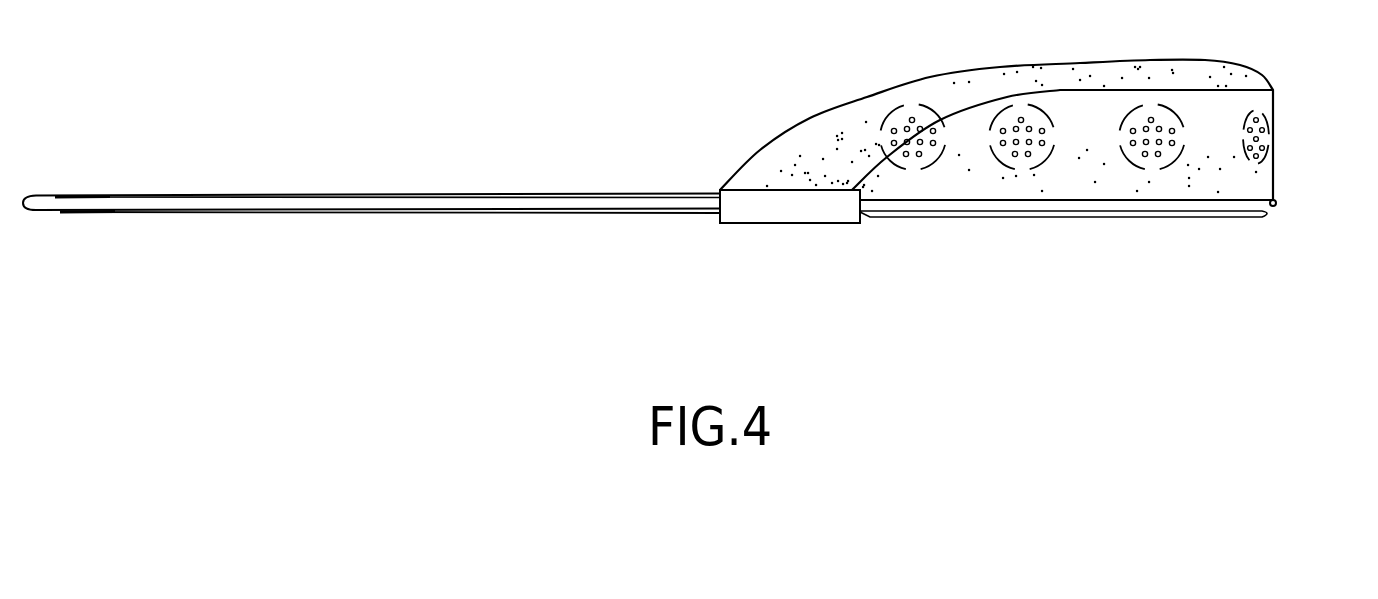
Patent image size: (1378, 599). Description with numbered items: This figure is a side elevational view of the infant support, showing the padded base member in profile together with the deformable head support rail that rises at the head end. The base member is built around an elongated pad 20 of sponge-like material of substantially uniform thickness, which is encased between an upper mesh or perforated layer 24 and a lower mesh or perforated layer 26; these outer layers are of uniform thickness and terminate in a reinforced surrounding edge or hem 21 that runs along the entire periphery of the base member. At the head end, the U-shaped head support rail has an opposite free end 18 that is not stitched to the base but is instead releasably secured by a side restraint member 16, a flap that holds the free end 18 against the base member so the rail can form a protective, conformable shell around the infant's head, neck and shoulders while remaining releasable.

The side restraint member 16 is at (823, 214).
The free end 18 is at (812, 133).
The elongated pad 20 is at (375, 210).
The reinforced surrounding edge 21 is at (1276, 203).
The upper mesh layer 24 is at (283, 193).
The lower mesh layer 26 is at (176, 211).